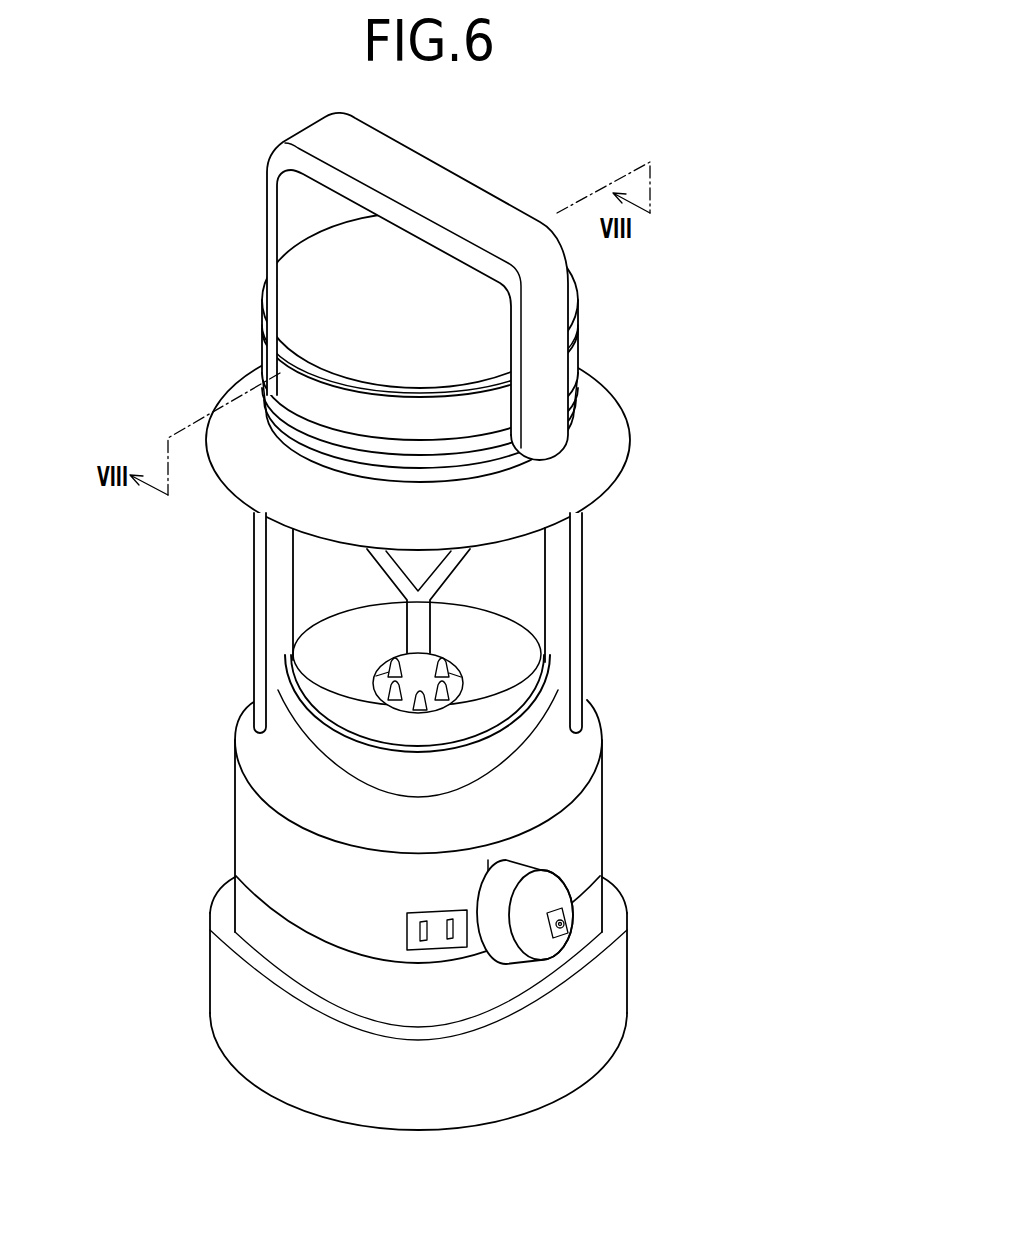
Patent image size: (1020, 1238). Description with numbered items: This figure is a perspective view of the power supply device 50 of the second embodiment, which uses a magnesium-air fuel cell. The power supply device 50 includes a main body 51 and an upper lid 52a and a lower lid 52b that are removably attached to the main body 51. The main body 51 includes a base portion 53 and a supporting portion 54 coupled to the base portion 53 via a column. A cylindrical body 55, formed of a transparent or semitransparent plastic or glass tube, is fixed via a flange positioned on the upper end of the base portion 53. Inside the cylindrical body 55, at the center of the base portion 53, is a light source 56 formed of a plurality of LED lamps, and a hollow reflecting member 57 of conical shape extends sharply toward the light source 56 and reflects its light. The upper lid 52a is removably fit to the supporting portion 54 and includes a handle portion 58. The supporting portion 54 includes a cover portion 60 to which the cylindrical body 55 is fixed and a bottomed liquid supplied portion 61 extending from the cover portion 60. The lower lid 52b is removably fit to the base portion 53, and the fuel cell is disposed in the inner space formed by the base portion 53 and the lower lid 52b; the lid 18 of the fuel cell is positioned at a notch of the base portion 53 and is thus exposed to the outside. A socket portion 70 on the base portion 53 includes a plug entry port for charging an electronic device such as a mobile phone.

The lid 18 is at (563, 896).
The power supply device 50 is at (670, 266).
The main body 51 is at (688, 458).
The upper lid 52a is at (270, 355).
The lower lid 52b is at (590, 1037).
The base portion 53 is at (584, 829).
The supporting portion 54 is at (257, 622).
The cylindrical body 55 is at (525, 577).
The light source 56 is at (380, 680).
The reflecting member 57 is at (375, 570).
The handle portion 58 is at (410, 175).
The cover portion 60 is at (600, 417).
The liquid supplied portion 61 is at (485, 452).
The socket portion 70 is at (432, 918).